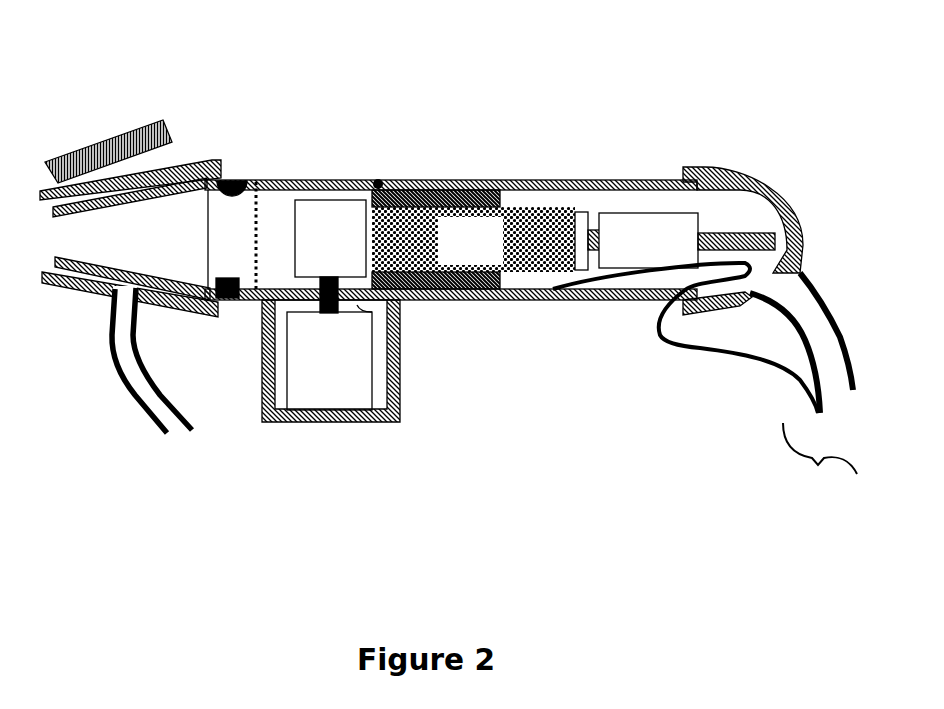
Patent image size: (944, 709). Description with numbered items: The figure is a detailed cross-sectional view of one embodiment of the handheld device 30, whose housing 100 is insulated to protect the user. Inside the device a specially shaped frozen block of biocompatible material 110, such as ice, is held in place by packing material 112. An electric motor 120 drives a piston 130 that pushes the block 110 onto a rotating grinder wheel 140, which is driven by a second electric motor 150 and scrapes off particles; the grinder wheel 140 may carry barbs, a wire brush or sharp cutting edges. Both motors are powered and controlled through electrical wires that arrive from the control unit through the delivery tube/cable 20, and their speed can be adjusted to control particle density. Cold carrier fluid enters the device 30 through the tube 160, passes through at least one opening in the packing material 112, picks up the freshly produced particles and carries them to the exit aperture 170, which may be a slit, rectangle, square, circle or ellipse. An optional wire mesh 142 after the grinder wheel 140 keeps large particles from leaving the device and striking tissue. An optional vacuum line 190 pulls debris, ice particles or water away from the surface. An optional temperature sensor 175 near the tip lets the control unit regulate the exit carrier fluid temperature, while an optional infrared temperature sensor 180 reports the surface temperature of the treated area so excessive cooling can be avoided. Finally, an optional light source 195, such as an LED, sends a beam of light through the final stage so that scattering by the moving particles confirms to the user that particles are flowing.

The handheld device 30 is at (540, 115).
The delivery tube/cable 20 is at (820, 459).
The housing 100 is at (462, 178).
The frozen block of biocompatible material 110 is at (473, 239).
The packing material 112 is at (378, 183).
The electric motor 120 is at (687, 240).
The piston 130 is at (591, 212).
The rotating grinder wheel 140 is at (330, 256).
The wire mesh 142 is at (262, 206).
The second electric motor 150 is at (331, 361).
The tube 160 is at (835, 378).
The exit aperture 170 is at (52, 240).
The temperature sensor 175 is at (232, 298).
The infrared temperature sensor 180 is at (113, 141).
The vacuum line 190 is at (178, 428).
The light source 195 is at (231, 178).